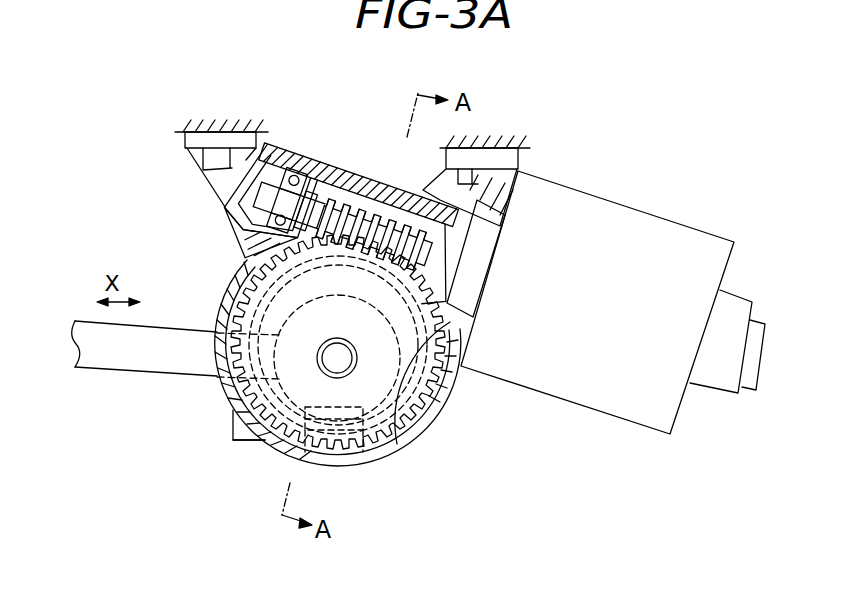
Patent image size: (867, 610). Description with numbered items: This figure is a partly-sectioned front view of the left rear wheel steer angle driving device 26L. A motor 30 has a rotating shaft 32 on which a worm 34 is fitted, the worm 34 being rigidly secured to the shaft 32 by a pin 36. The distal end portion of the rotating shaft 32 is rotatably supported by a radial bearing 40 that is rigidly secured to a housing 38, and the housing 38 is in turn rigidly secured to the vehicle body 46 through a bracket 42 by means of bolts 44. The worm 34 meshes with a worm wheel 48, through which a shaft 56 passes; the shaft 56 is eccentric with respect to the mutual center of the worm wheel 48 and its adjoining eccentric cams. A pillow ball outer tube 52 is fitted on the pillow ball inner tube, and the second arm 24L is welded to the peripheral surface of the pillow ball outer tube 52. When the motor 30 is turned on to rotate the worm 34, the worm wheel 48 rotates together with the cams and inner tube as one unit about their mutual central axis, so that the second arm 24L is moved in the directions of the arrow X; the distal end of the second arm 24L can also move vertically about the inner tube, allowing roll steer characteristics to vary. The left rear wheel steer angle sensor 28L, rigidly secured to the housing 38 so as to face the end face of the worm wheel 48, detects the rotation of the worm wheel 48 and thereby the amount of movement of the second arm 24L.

The second arm 24L is at (160, 376).
The left rear wheel steer angle driving device 26L is at (548, 122).
The left rear wheel steer angle sensor 28L is at (371, 466).
The motor 30 is at (624, 202).
The rotating shaft 32 is at (280, 161).
The worm 34 is at (386, 202).
The pin 36 is at (308, 177).
The housing 38 is at (366, 192).
The radial bearing 40 is at (299, 166).
The bracket 42 is at (231, 224).
The bolts 44 is at (198, 167).
The vehicle body 46 is at (185, 132).
The worm wheel 48 is at (453, 397).
The pillow ball outer tube 52 is at (424, 434).
The shaft 56 is at (357, 360).